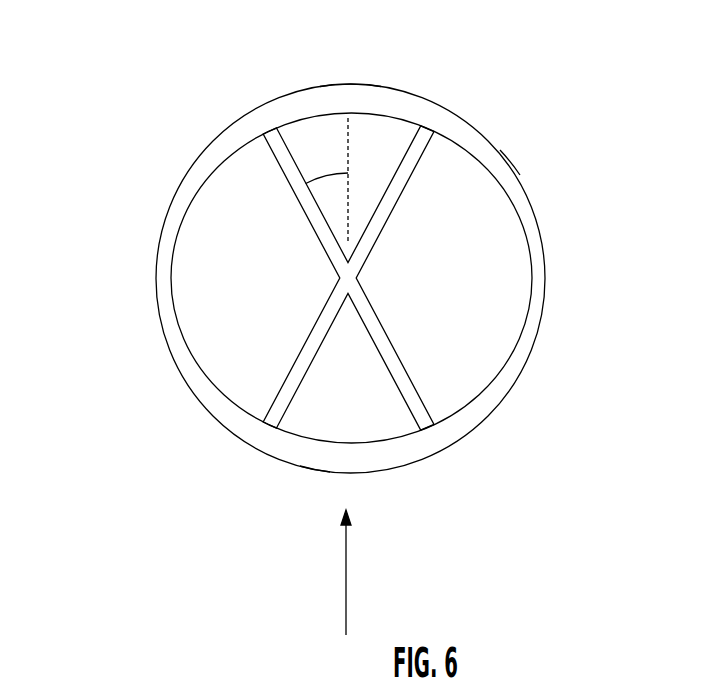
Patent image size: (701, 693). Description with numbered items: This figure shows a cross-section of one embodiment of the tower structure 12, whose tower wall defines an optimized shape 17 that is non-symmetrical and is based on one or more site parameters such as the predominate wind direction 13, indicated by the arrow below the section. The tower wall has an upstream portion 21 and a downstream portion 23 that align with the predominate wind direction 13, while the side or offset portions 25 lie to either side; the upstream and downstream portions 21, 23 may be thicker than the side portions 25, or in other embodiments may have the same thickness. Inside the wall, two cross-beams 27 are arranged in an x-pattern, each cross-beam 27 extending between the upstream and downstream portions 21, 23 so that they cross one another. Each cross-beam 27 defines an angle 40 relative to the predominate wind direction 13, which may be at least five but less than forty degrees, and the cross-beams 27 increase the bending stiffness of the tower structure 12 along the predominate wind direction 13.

The tower structure 12 is at (155, 98).
The predominate wind direction 13 is at (347, 625).
The optimized shape 17 is at (605, 143).
The upstream portion 21 is at (297, 502).
The downstream portion 23 is at (332, 79).
The side portions 25 is at (127, 293).
The cross-beams 27 is at (310, 361).
The angle 40 is at (335, 175).